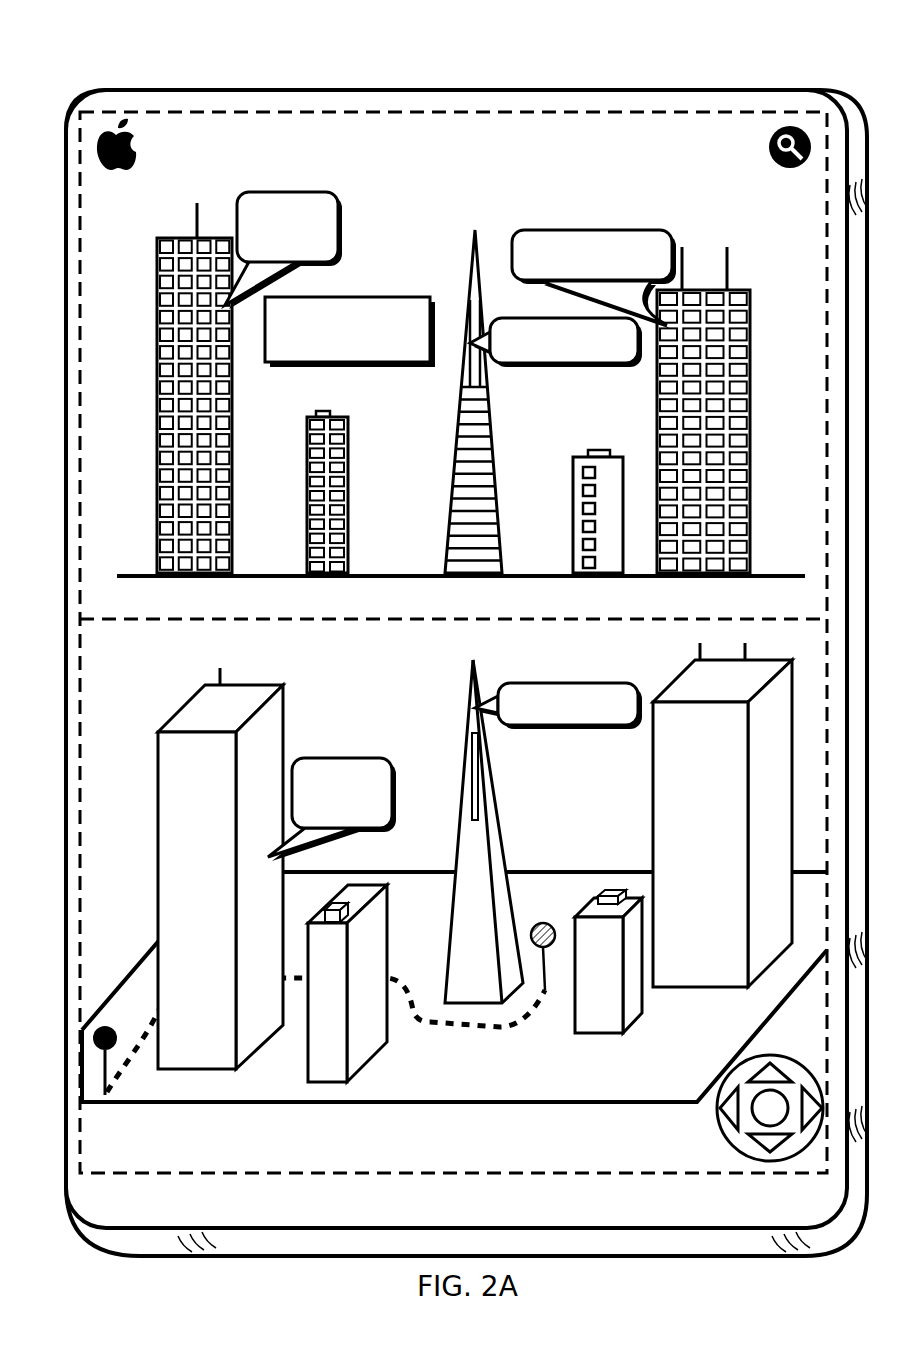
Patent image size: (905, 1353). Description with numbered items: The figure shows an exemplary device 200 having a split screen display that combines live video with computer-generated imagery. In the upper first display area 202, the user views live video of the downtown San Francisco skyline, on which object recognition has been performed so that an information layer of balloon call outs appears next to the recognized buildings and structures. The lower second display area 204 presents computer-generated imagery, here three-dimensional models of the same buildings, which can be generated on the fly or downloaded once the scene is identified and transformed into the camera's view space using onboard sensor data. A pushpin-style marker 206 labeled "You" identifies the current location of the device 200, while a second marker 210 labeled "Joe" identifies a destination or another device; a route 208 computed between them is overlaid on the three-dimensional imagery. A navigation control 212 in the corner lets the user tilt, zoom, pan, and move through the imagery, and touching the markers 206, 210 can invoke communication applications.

The device 200 is at (80, 47).
The first display area 202 is at (746, 229).
The second display area 204 is at (153, 676).
The marker 206 is at (112, 1046).
The route path 208 is at (479, 1028).
The second marker 210 is at (545, 990).
The navigation control 212 is at (714, 1117).